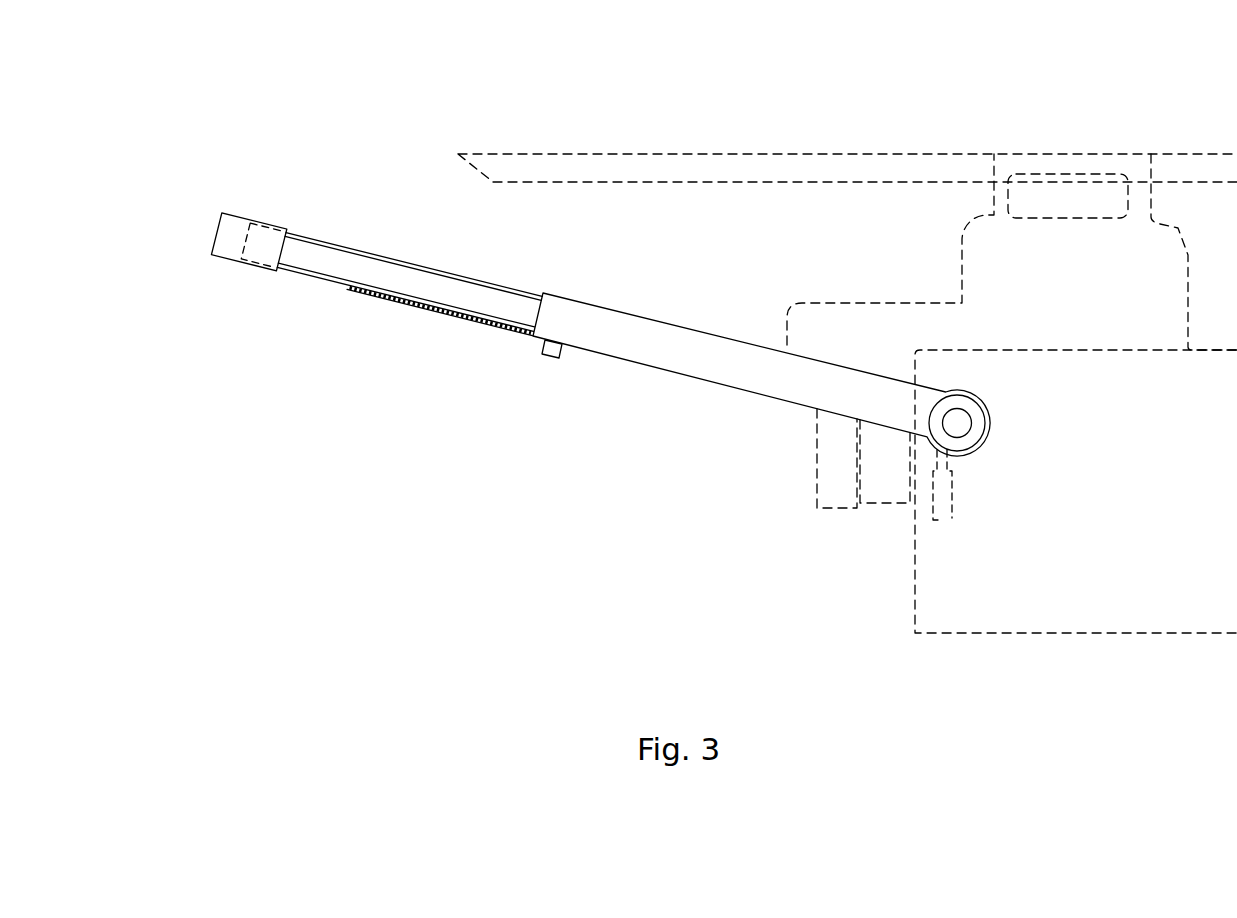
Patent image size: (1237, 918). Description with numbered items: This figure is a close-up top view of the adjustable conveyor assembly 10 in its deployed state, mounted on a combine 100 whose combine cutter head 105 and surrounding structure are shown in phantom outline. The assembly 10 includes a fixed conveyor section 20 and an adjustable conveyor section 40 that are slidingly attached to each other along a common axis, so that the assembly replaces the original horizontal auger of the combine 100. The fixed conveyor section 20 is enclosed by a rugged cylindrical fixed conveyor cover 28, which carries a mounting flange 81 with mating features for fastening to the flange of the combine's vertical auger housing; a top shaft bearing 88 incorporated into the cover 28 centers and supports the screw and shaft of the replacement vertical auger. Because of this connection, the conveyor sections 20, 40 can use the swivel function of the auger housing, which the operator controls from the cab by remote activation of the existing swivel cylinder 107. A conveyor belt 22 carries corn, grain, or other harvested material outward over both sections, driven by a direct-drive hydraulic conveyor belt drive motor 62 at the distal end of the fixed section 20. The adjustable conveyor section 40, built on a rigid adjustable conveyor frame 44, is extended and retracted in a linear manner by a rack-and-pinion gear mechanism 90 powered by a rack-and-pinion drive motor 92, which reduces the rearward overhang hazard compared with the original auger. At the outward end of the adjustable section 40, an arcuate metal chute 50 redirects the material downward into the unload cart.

The adjustable conveyor assembly 10 is at (218, 522).
The fixed conveyor section 20 is at (761, 361).
The conveyor belt 22 is at (326, 268).
The fixed conveyor cover 28 is at (777, 385).
The adjustable conveyor section 40 is at (409, 252).
The adjustable conveyor frame 44 is at (409, 281).
The chute 50 is at (234, 216).
The conveyor belt drive motor 62 is at (527, 379).
The mounting flange 81 is at (990, 424).
The top shaft bearing 88 is at (958, 424).
The rack-and-pinion gear mechanism 90 is at (491, 326).
The rack-and-pinion drive motor 92 is at (551, 362).
The combine 100 is at (902, 302).
The combine cutter head 105 is at (875, 153).
The swivel cylinder 107 is at (943, 521).